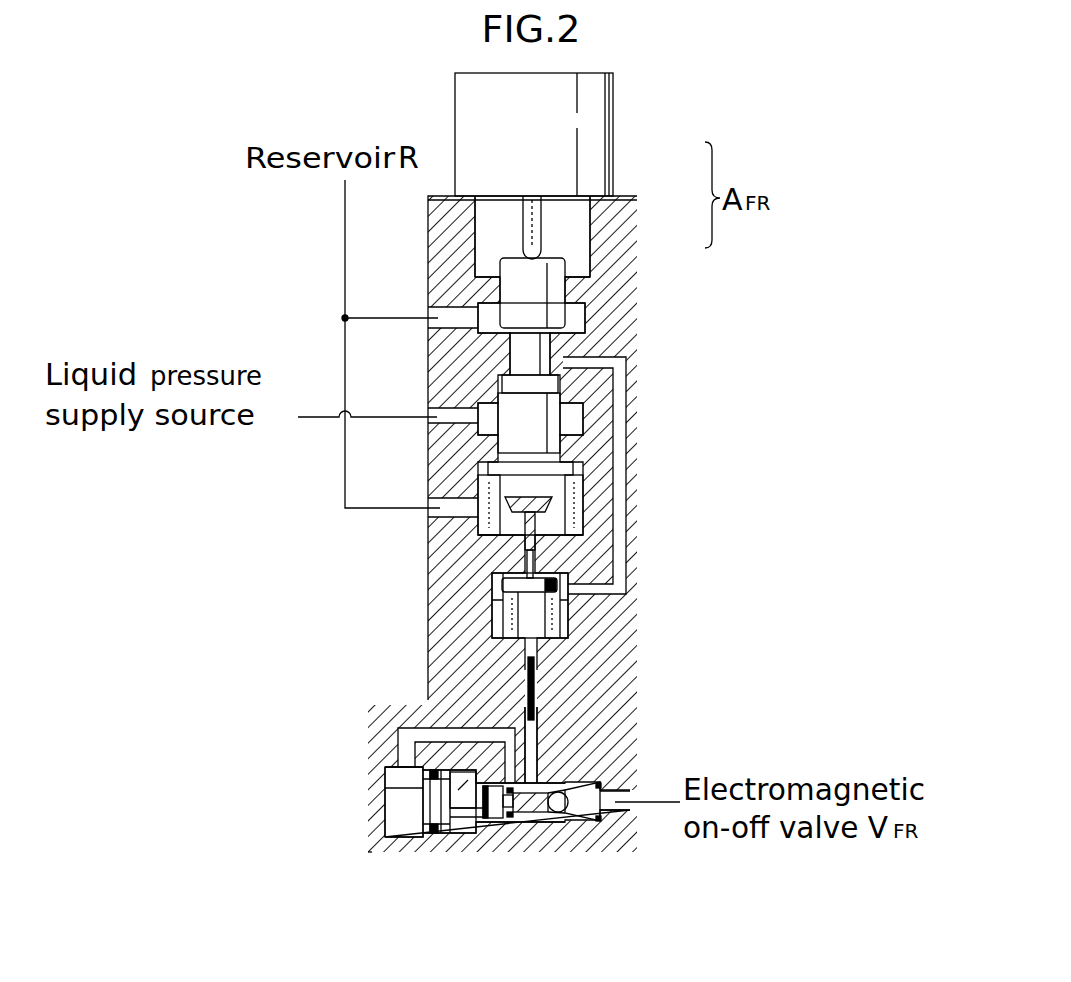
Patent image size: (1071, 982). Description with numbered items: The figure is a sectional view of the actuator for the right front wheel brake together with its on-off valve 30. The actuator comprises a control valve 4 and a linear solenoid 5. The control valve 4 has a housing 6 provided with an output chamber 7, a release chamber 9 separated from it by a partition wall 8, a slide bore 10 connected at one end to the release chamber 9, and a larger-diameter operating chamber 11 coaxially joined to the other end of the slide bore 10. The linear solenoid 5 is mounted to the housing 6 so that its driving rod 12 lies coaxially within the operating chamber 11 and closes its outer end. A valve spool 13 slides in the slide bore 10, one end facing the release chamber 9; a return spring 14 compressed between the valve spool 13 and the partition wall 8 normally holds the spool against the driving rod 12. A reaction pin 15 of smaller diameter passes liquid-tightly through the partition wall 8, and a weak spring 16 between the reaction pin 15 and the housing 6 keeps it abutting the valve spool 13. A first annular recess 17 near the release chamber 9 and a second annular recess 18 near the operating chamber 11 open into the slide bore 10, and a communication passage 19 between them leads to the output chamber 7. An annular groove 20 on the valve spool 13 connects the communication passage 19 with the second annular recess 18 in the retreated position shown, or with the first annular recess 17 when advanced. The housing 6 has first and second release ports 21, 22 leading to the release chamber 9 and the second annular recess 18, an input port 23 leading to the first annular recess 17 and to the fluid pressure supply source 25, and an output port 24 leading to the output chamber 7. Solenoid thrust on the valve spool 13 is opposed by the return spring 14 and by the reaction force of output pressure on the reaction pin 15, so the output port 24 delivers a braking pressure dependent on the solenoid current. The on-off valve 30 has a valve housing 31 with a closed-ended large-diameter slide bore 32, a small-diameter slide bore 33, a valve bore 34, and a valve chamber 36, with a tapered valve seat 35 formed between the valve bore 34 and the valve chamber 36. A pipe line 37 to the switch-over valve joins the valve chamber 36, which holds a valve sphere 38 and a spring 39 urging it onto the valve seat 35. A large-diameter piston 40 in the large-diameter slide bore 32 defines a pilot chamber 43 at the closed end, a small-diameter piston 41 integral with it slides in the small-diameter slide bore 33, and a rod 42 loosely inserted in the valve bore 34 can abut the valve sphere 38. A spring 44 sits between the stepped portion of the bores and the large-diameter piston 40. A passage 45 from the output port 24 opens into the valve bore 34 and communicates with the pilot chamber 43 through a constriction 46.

The control valve 4 is at (643, 258).
The linear solenoid 5 is at (630, 165).
The housing 6 is at (625, 330).
The output chamber 7 is at (495, 628).
The partition wall 8 is at (502, 583).
The release chamber 9 is at (470, 530).
The slide bore 10 is at (505, 352).
The operating chamber 11 is at (487, 229).
The driving rod 12 is at (536, 243).
The valve spool 13 is at (532, 433).
The return spring 14 is at (475, 482).
The reaction pin 15 is at (535, 558).
The spring 16 is at (560, 605).
The first annular recess 17 is at (580, 427).
The second annular recess 18 is at (583, 318).
The communication passage 19 is at (617, 470).
The annular groove 20 is at (553, 355).
The first release port 21 is at (440, 505).
The second release port 22 is at (457, 313).
The input port 23 is at (455, 405).
The output port 24 is at (535, 645).
The fluid pressure supply source 25 is at (348, 418).
The on-off valve 30 is at (470, 853).
The valve housing 31 is at (389, 712).
The large-diameter slide bore 32 is at (398, 822).
The small-diameter slide bore 33 is at (490, 820).
The valve bore 34 is at (532, 815).
The tapered valve seat 35 is at (556, 780).
The valve chamber 36 is at (568, 815).
The pipe line 37 is at (655, 800).
The valve sphere 38 is at (535, 814).
The spring 39 is at (601, 820).
The large-diameter piston 40 is at (398, 788).
The small-diameter piston 41 is at (437, 836).
The rod 42 is at (540, 760).
The pilot chamber 43 is at (392, 770).
The spring 44 is at (408, 735).
The passage 45 is at (505, 782).
The constriction 46 is at (470, 770).